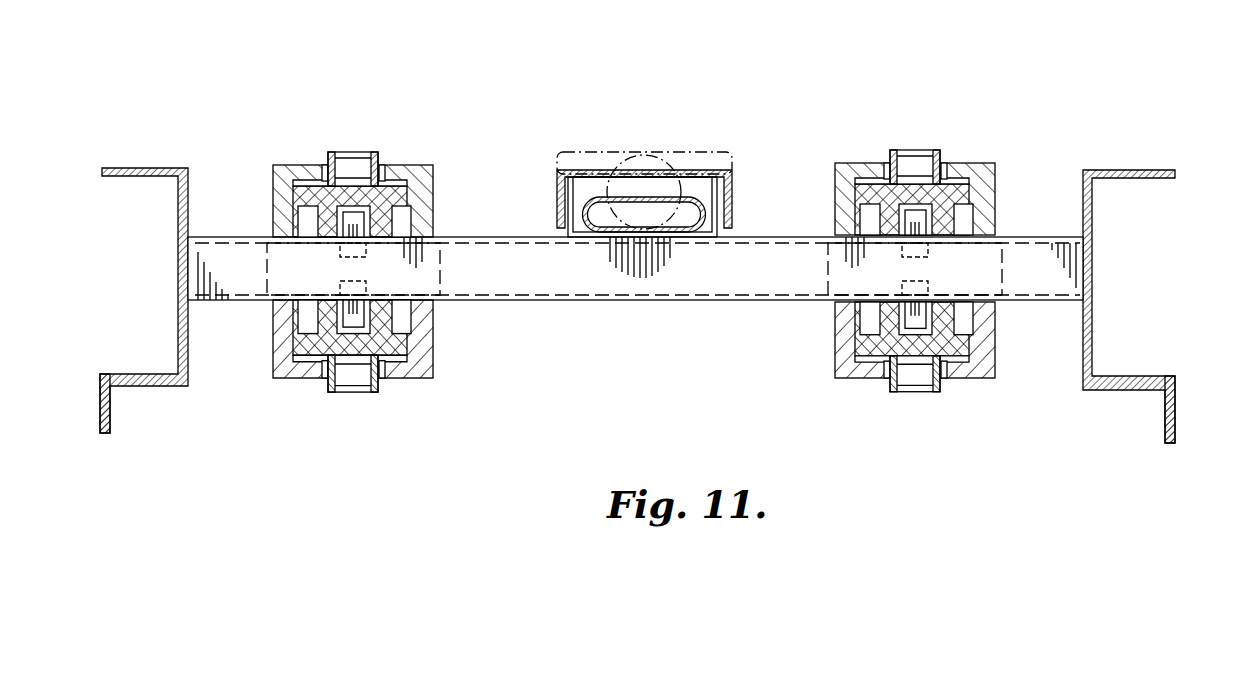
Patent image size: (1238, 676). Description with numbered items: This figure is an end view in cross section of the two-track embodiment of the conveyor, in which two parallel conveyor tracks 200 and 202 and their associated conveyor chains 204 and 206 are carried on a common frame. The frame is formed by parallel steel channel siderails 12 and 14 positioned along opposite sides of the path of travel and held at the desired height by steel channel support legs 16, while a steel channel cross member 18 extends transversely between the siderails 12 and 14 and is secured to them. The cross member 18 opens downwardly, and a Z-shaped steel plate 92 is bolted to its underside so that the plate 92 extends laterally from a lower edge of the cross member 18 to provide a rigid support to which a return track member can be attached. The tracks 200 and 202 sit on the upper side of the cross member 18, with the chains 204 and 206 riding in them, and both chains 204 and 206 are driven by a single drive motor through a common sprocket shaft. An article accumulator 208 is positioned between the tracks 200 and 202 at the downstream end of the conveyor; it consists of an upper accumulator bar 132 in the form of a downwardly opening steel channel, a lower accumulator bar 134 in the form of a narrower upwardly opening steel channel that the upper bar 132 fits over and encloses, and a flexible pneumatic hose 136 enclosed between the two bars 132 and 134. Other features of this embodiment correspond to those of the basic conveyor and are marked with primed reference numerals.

The siderail 12 is at (1148, 170).
The siderail 14 is at (128, 168).
The support leg 16 is at (108, 418).
The cross member 18 is at (661, 290).
The Z-shaped steel plate 92 is at (440, 302).
The upper accumulator bar 132 is at (731, 181).
The lower accumulator bar 134 is at (731, 208).
The flexible pneumatic hose 136 is at (697, 210).
The conveyor track 200 is at (983, 158).
The conveyor track 202 is at (411, 163).
The conveyor chain 204 is at (913, 150).
The conveyor chain 206 is at (352, 152).
The article accumulator 208 is at (678, 161).